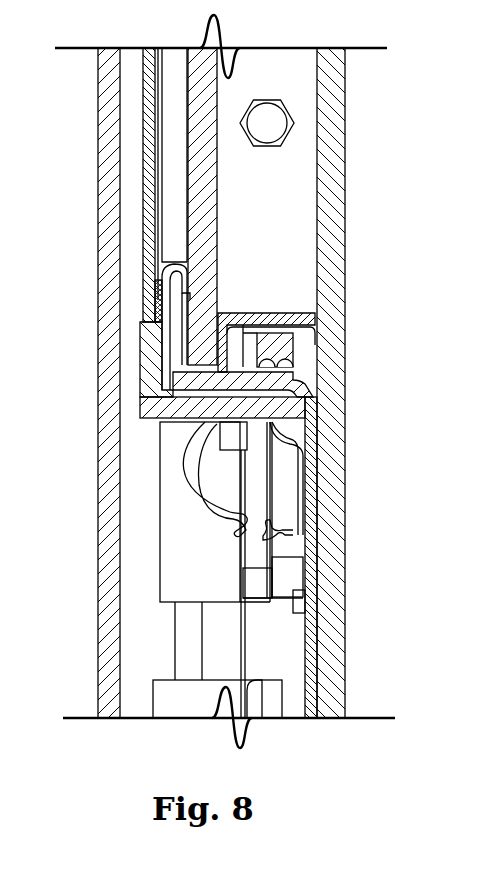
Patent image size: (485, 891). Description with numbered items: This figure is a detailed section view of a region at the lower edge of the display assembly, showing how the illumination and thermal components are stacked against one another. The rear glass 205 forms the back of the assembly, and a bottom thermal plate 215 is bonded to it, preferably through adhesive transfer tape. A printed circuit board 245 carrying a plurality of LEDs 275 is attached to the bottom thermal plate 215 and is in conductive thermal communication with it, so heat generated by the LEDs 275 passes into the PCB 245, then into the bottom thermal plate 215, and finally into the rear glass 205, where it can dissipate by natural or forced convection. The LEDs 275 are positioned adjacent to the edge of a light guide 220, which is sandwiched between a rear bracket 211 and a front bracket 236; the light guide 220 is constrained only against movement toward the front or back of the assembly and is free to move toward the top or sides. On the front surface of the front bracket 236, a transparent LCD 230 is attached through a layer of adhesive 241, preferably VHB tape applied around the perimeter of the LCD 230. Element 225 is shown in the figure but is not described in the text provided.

The rear glass 205 is at (330, 268).
The rear bracket 211 is at (310, 320).
The bottom thermal plate 215 is at (313, 397).
The light guide 220 is at (193, 125).
The outer wall 225 is at (104, 138).
The transparent LCD 230 is at (150, 205).
The front bracket 236 is at (170, 268).
The adhesive 241 is at (157, 306).
The printed circuit board 245 is at (185, 365).
The LEDs 275 is at (205, 372).